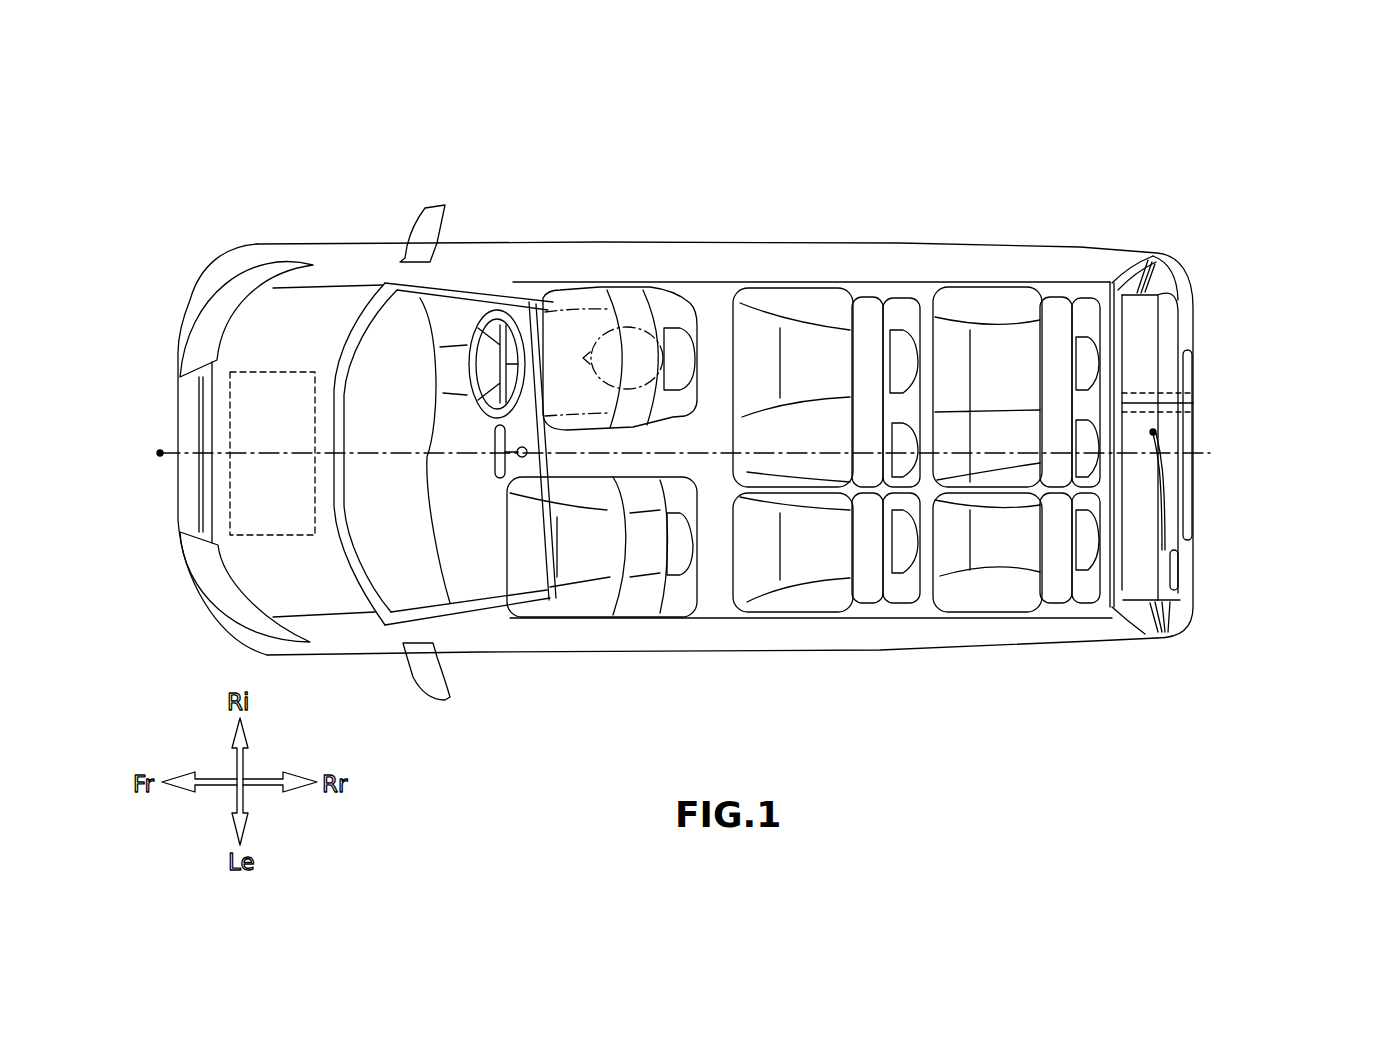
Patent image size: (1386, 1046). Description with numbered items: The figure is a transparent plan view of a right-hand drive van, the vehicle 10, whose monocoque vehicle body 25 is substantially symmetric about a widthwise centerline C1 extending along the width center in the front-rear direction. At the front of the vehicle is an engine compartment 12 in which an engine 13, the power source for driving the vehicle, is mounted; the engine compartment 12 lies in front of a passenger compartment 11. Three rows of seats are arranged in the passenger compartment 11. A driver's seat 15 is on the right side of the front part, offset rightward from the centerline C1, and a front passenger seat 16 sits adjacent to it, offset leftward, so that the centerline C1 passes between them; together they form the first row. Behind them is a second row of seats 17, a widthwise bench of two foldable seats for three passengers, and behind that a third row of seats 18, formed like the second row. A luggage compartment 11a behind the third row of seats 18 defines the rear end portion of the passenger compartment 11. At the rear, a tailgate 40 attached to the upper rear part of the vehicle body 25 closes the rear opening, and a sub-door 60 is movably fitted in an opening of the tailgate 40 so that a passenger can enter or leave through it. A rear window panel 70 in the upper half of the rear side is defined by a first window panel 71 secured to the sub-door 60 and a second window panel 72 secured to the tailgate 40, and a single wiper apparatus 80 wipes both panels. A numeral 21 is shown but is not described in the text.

The vehicle 10 is at (205, 147).
The passenger compartment 11 is at (723, 437).
The luggage compartment 11a is at (1111, 310).
The engine compartment 12 is at (318, 330).
The engine 13 is at (258, 372).
The driver's seat 15 is at (661, 293).
The front passenger seat 16 is at (673, 618).
The second row of seats 17 is at (815, 293).
The third row of seats 18 is at (982, 290).
The windshield 21 is at (484, 566).
The vehicle body 25 is at (948, 655).
The tailgate 40 is at (1152, 256).
The sub-door 60 is at (1157, 605).
The rear window panel 70 is at (1300, 368).
The first window panel 71 is at (1147, 426).
The second window panel 72 is at (1147, 382).
The wiper apparatus 80 is at (1153, 550).
The centerline C1 is at (160, 450).